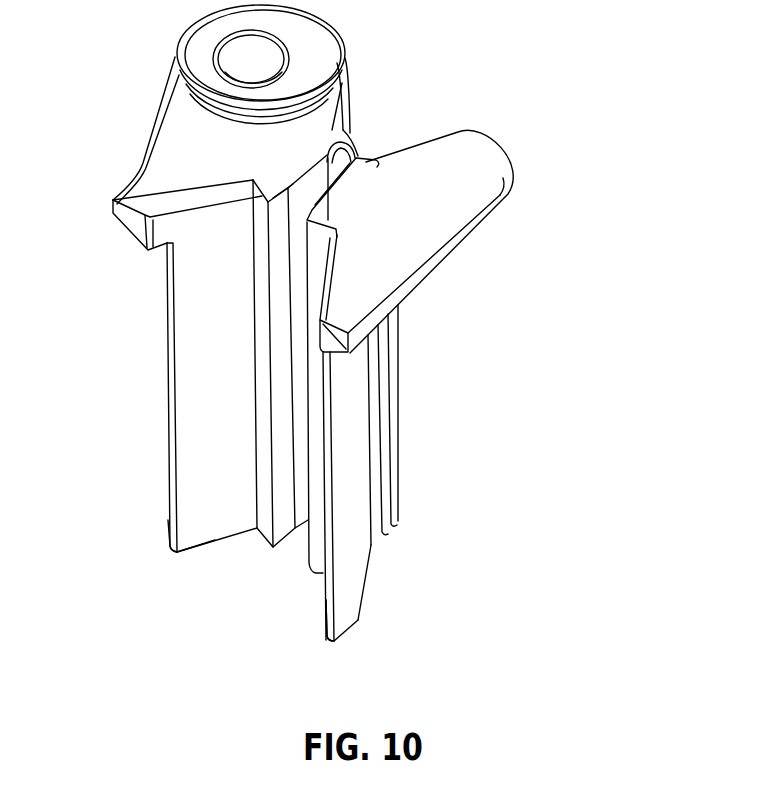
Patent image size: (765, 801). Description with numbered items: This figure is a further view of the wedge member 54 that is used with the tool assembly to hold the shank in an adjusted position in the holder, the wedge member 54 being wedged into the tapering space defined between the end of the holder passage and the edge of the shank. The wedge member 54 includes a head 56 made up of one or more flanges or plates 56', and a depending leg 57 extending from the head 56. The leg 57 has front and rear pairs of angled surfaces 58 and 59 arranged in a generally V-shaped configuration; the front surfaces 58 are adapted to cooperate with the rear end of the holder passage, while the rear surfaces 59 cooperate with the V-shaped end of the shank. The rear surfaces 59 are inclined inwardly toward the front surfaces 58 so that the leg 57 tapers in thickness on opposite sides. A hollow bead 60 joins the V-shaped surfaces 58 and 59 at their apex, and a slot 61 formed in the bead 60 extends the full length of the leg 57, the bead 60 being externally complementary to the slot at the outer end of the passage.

The wedge member 54 is at (466, 300).
The head 56 is at (194, 64).
The flanges or plates 56' is at (462, 225).
The depending leg 57 is at (395, 403).
The front angled surfaces 58 is at (193, 543).
The rear angled surfaces 59 is at (169, 426).
The hollow bead 60 is at (353, 137).
The slot 61 is at (355, 155).